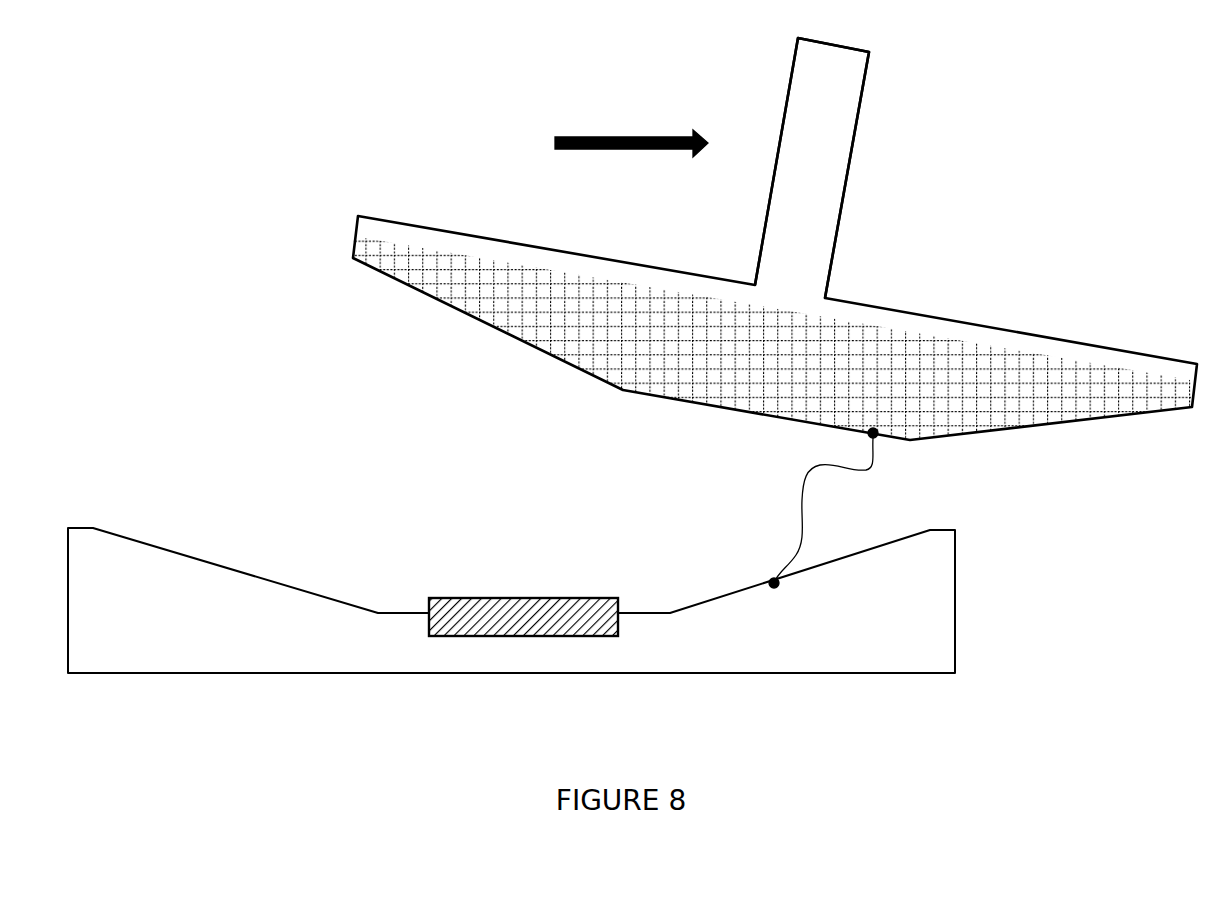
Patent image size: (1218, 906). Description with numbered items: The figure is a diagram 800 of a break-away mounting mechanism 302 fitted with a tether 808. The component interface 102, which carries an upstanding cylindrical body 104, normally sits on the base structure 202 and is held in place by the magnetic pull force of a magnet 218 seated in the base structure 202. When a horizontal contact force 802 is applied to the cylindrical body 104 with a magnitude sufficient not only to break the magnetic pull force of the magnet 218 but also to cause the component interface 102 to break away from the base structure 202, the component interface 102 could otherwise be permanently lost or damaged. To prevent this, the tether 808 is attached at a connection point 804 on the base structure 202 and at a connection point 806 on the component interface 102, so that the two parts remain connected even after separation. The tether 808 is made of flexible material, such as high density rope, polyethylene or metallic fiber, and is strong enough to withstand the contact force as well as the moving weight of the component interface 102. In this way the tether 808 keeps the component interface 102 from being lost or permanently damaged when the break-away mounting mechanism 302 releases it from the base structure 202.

The component interface 102 is at (353, 228).
The cylindrical body 104 is at (855, 137).
The base structure 202 is at (955, 642).
The magnet 218 is at (620, 628).
The break-away mounting mechanism 302 is at (157, 138).
The diagram 800 is at (603, 745).
The horizontal contact force 802 is at (610, 143).
The connection point 804 is at (773, 601).
The connection point 806 is at (897, 447).
The tether 808 is at (819, 510).